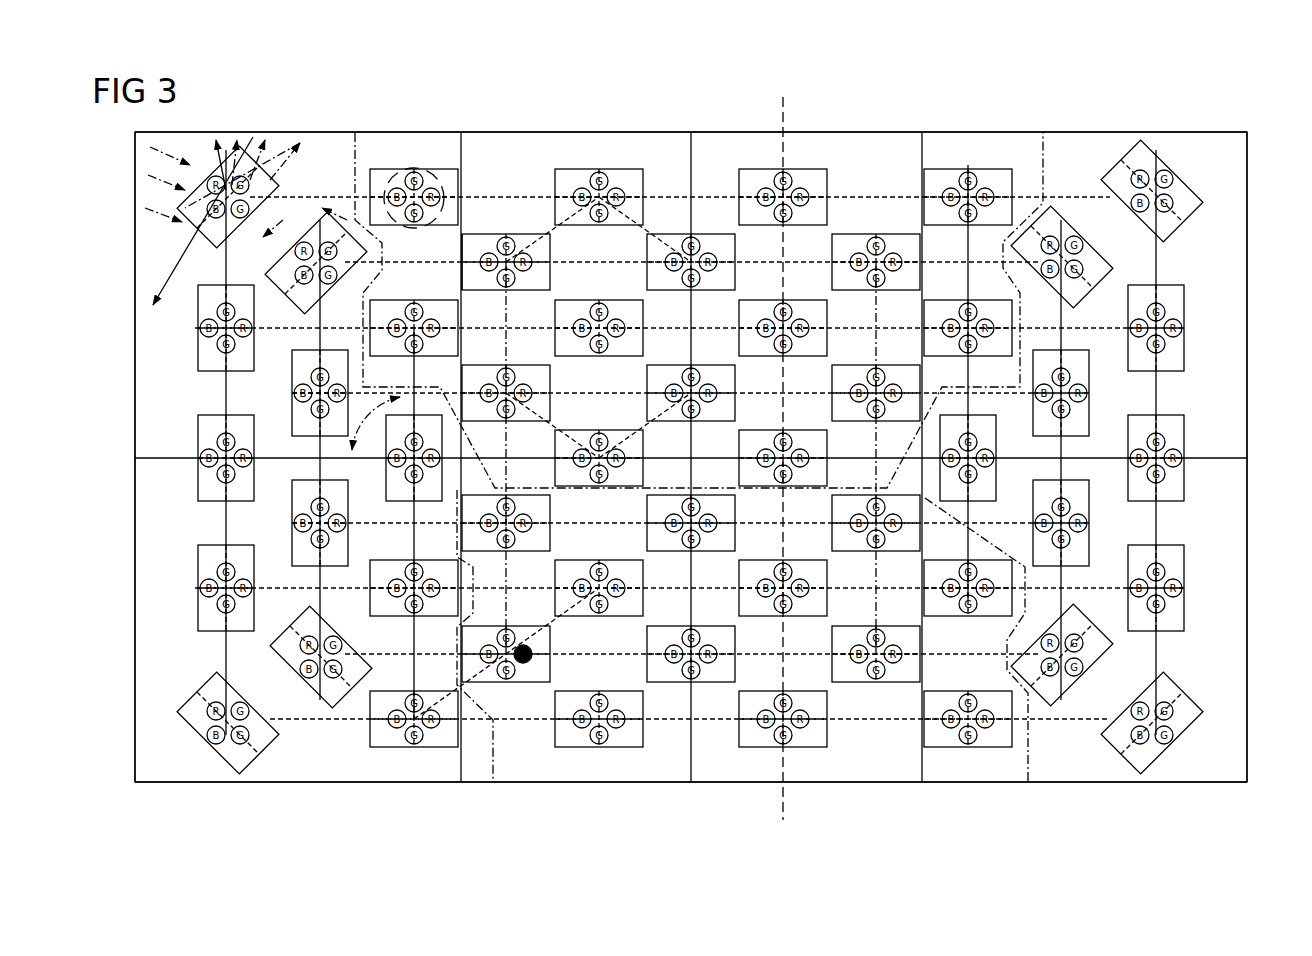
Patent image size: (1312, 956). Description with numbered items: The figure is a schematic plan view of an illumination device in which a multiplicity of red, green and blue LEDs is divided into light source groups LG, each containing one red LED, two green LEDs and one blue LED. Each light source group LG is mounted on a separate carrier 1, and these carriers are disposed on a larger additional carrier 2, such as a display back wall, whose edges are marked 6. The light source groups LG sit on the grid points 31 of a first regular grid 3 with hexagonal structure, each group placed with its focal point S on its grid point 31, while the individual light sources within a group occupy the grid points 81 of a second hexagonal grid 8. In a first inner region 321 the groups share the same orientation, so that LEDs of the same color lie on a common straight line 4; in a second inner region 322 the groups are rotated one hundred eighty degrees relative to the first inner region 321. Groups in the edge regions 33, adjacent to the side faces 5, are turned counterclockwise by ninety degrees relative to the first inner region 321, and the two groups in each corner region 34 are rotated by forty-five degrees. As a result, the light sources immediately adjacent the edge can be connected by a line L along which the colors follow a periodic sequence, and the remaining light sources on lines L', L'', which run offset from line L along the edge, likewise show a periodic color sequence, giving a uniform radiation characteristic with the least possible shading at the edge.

The carrier 1 is at (448, 180).
The additional carrier 2 is at (182, 777).
The first regular grid 3 is at (622, 225).
The grid points 31 is at (552, 276).
The common straight line 4 is at (782, 112).
The side faces 5 is at (134, 428).
The edge of luminous surface 6 is at (135, 133).
The second regular grid 8 is at (566, 627).
The grid points 81 is at (527, 664).
The edge regions 33 is at (1070, 132).
The corner regions 34 is at (275, 137).
The first inner region 321 is at (632, 136).
The second inner region 322 is at (633, 781).
The light source group LG is at (392, 170).
The focal point S is at (455, 275).
The line L is at (690, 749).
The line L' is at (293, 460).
The line L'' is at (387, 525).